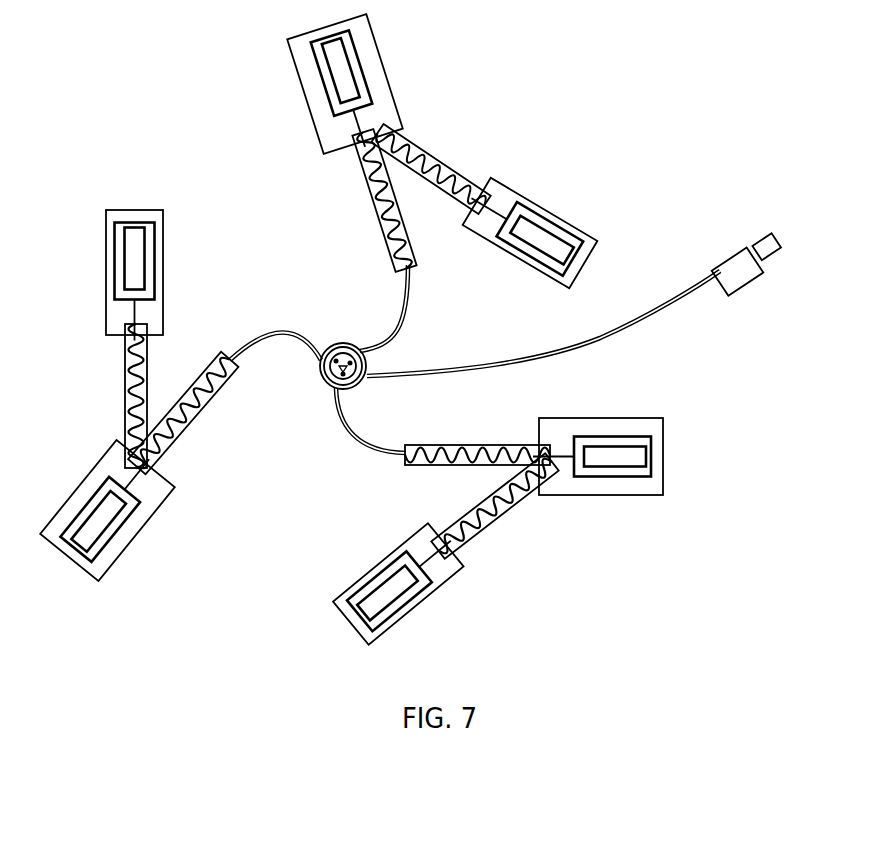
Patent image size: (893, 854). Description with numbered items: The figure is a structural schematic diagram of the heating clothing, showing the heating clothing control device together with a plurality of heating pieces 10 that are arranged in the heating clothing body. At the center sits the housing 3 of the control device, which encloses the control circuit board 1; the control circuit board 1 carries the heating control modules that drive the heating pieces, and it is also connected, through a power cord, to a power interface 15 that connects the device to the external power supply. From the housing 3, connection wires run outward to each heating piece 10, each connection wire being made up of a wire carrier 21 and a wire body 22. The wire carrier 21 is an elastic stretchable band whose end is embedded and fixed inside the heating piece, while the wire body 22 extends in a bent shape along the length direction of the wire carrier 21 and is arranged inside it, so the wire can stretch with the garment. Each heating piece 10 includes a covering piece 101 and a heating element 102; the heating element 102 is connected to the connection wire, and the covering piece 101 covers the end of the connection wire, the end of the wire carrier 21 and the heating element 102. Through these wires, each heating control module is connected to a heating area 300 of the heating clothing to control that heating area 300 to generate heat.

The control circuit board 1 is at (330, 383).
The housing 3 is at (336, 340).
The heating piece 10 is at (393, 105).
The power interface 15 is at (733, 243).
The wire carrier 21 is at (451, 560).
The wire body 22 is at (478, 542).
The covering piece 101 is at (558, 201).
The heating element 102 is at (572, 222).
The heating area 300 is at (68, 503).